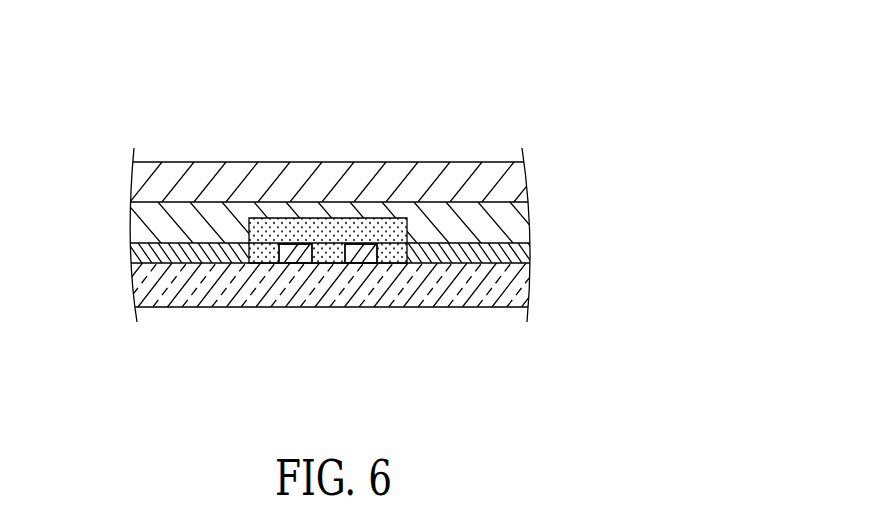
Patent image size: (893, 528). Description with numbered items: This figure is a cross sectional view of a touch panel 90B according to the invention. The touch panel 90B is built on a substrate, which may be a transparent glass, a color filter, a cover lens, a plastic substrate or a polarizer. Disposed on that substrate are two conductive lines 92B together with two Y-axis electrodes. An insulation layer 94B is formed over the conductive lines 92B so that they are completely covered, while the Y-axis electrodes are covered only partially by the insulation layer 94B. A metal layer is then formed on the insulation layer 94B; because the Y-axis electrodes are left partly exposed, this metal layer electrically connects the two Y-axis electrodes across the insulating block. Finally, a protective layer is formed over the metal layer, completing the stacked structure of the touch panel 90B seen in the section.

The touch panel 90B is at (354, 62).
The conductive lines 92B is at (293, 258).
The insulation layer 94B is at (322, 233).